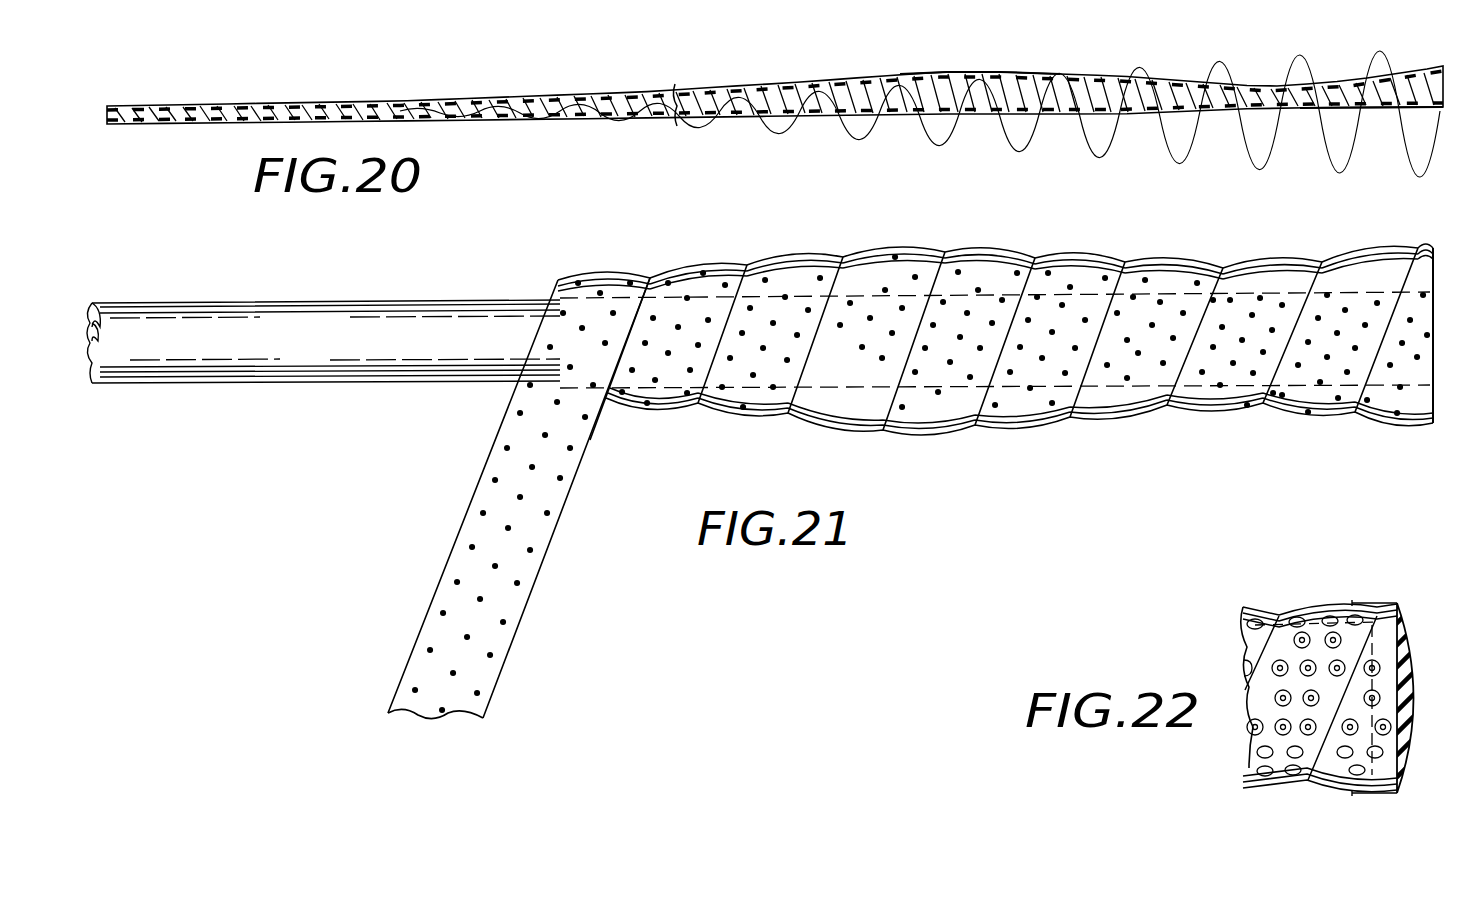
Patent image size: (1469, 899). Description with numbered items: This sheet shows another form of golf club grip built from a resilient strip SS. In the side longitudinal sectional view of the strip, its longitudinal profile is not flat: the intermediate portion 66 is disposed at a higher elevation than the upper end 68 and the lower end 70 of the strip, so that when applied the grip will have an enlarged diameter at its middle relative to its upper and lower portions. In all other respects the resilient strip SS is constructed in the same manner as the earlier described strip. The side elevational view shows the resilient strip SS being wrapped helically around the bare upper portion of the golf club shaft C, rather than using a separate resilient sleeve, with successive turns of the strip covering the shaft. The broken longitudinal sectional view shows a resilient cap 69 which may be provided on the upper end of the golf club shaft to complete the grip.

In FIG. 20, the lower end 70 is at (236, 106).
In FIG. 20, the intermediate portion 66 is at (834, 98).
In FIG. 20, the resilient strip SS is at (995, 71).
In FIG. 21, the resilient strip SS is at (552, 496).
In FIG. 22, the resilient strip SS is at (1246, 640).
In FIG. 20, the upper end 68 is at (1338, 96).
In FIG. 21, the golf club shaft C is at (323, 341).
In FIG. 22, the resilient cap 69 is at (1403, 790).